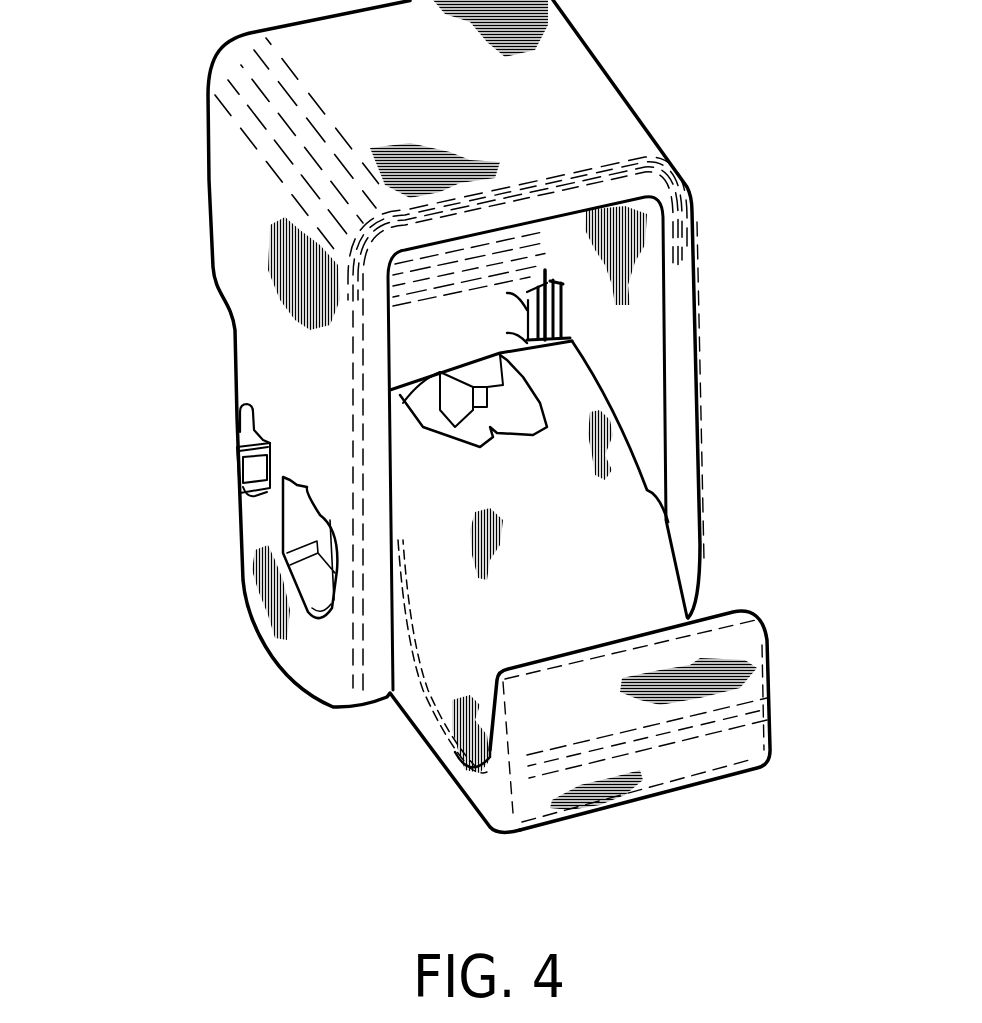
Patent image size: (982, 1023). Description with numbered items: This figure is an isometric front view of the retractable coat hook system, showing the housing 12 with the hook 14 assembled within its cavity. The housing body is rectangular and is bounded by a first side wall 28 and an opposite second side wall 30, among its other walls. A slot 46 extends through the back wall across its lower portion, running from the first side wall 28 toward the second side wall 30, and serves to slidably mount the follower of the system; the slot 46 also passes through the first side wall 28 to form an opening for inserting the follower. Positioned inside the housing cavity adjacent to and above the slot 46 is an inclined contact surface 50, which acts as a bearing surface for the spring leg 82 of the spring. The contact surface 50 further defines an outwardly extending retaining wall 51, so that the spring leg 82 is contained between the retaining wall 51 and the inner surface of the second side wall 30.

The housing 12 is at (675, 218).
The hook 14 is at (714, 700).
The first side wall 28 is at (370, 370).
The second side wall 30 is at (678, 406).
The slot 46 is at (243, 447).
The inclined contact surface 50 is at (560, 320).
The retaining wall 51 is at (592, 440).
The spring leg 82 is at (548, 283).